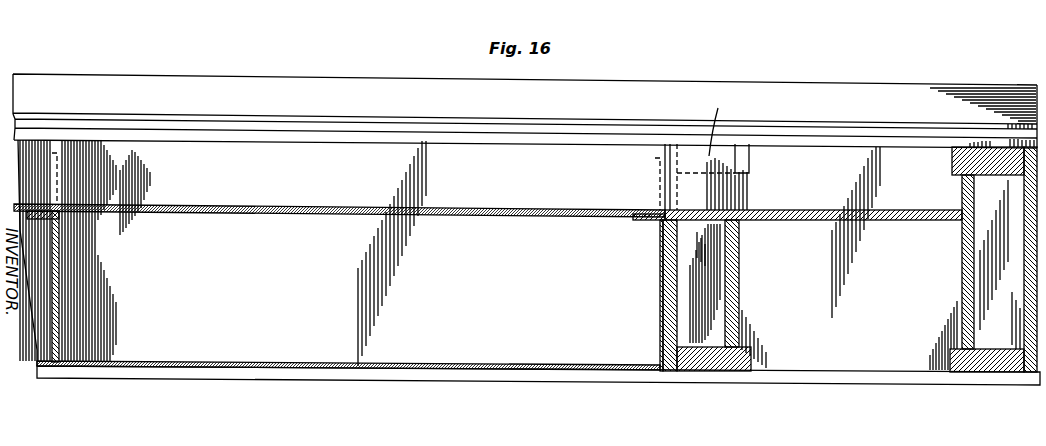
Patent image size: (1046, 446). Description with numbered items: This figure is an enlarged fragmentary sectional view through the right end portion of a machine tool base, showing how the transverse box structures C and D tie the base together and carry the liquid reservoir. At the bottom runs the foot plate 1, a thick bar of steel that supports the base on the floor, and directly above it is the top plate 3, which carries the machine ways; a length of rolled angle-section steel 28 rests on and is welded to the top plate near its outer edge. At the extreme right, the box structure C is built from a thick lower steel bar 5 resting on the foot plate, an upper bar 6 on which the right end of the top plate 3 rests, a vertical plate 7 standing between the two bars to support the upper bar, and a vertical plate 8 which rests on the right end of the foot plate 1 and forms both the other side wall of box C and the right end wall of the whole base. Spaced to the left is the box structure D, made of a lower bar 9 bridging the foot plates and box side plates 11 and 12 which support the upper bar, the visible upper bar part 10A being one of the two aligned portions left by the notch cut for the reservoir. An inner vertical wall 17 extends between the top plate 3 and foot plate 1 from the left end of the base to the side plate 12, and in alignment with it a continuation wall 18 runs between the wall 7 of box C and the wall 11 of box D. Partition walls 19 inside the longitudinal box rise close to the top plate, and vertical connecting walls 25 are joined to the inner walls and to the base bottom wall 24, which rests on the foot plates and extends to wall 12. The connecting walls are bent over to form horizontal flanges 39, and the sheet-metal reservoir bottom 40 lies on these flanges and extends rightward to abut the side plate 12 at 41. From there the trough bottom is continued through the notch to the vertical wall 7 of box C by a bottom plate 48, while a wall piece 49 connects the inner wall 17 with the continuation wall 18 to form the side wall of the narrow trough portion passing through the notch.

The foot plate 1 is at (767, 378).
The top plate 3 is at (571, 137).
The lower steel bar 5 is at (988, 370).
The upper bar 6 is at (952, 153).
The vertical plate 7 is at (962, 190).
The vertical plate 8 is at (1026, 254).
The lower bar 9 is at (690, 373).
The upper bar part 10A is at (750, 160).
The box side plate 11 is at (739, 254).
The box side plate 12 is at (668, 241).
The inner vertical wall 17 is at (446, 182).
The continuation wall 18 is at (899, 308).
The partition wall 19 is at (62, 171).
The base bottom wall 24 is at (493, 362).
The vertical connecting wall 25 is at (59, 264).
The angle-section steel 28 is at (757, 90).
The horizontal flange 39 is at (33, 218).
The reservoir bottom 40 is at (574, 208).
The abutment of reservoir bottom 41 is at (713, 177).
The bottom plate 48 is at (778, 210).
The wall piece 49 is at (717, 122).
The transverse box structure C is at (976, 231).
The transverse box structure D is at (717, 291).